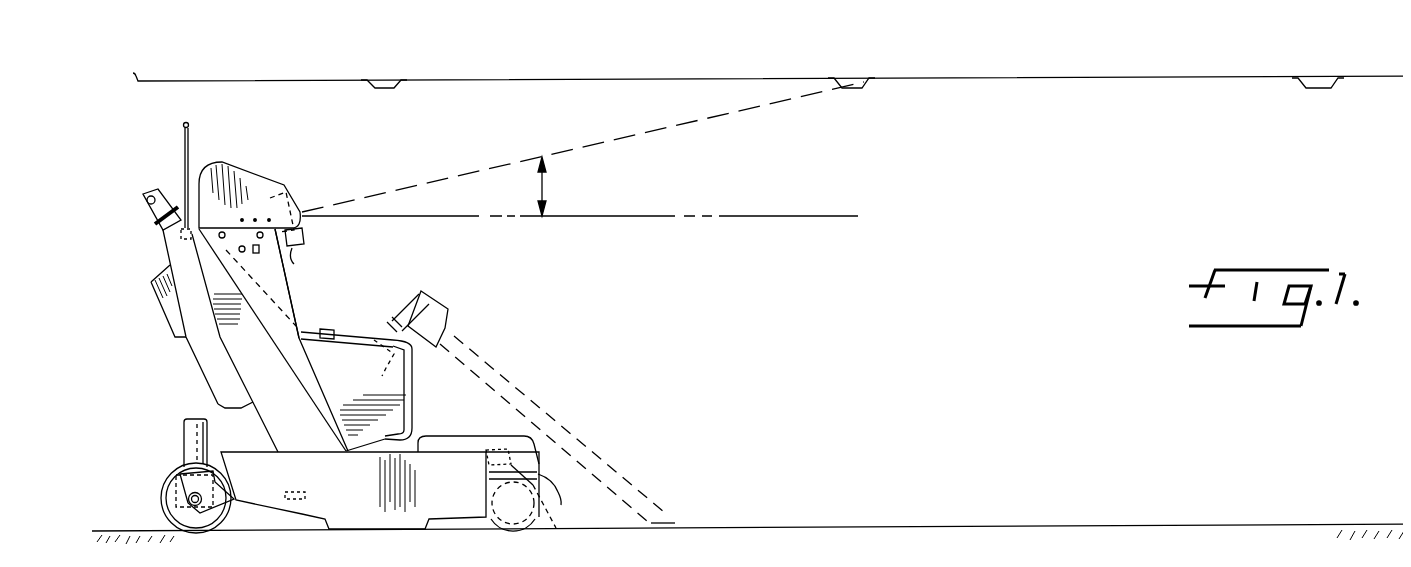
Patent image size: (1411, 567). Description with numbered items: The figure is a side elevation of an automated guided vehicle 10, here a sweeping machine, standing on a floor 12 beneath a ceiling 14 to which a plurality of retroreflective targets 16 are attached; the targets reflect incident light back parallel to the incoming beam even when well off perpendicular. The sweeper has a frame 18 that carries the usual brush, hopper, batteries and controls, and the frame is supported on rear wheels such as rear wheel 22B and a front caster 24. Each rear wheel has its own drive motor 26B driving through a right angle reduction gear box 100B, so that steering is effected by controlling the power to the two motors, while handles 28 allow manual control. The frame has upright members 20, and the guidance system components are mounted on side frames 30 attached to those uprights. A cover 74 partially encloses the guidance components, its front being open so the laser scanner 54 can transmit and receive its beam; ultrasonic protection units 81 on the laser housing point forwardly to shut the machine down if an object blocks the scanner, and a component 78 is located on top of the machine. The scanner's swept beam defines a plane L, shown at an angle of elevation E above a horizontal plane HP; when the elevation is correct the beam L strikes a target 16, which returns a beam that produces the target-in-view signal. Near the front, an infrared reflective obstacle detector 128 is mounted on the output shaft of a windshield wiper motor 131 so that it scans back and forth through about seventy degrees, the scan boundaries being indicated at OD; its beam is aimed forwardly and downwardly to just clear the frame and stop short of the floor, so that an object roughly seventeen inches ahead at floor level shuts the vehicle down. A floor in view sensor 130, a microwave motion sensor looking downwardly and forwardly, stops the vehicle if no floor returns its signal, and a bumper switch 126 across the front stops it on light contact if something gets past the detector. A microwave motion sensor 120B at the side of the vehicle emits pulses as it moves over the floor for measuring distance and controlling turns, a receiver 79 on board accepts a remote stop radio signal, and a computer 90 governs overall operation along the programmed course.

The automated guided vehicle 10 is at (321, 301).
The floor 12 is at (804, 519).
The ceiling 14 is at (1124, 69).
The light-reflective targets 16 is at (377, 81).
The frame 18 is at (258, 484).
The upright members 20 is at (188, 251).
The rear wheel 22B is at (153, 490).
The front caster 24 is at (493, 512).
The drive motor 26B is at (175, 415).
The handles 28 is at (145, 183).
The side frames 30 is at (281, 277).
The laser scanner 54 is at (279, 169).
The cover 74 is at (237, 165).
The element on top of the machine 78 is at (326, 321).
The receiver 79 is at (176, 117).
The ultrasonic protection units 81 is at (297, 228).
The computer 90 is at (158, 298).
The right angle reduction gear box 100B is at (157, 464).
The microwave motion sensor 120B is at (298, 477).
The bumper switch 126 is at (543, 485).
The infrared reflective obstacle detector 128 is at (433, 282).
The floor in view sensor 130 is at (471, 452).
The windshield wiper motor 131 is at (378, 360).
The plane of the transmitted light beam L is at (594, 112).
The angle of elevation E is at (538, 172).
The horizontal plane HP is at (764, 208).
The obstacle detector scan boundaries OD is at (540, 426).